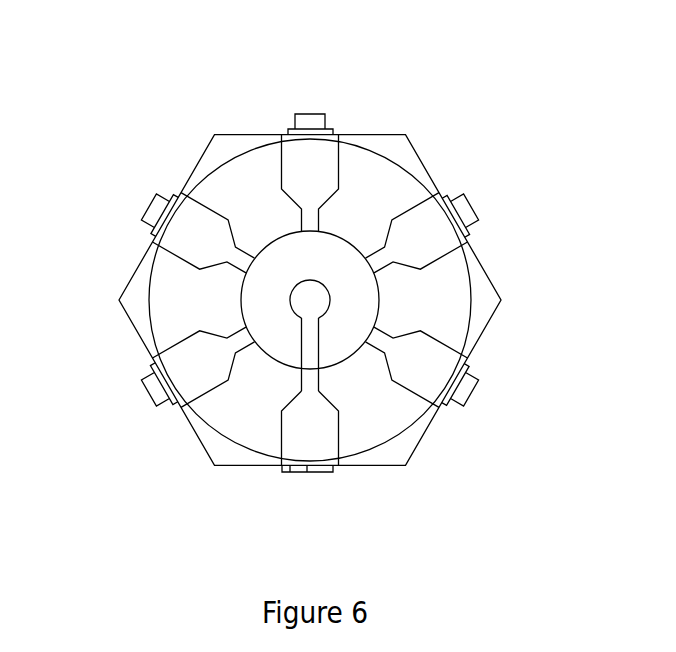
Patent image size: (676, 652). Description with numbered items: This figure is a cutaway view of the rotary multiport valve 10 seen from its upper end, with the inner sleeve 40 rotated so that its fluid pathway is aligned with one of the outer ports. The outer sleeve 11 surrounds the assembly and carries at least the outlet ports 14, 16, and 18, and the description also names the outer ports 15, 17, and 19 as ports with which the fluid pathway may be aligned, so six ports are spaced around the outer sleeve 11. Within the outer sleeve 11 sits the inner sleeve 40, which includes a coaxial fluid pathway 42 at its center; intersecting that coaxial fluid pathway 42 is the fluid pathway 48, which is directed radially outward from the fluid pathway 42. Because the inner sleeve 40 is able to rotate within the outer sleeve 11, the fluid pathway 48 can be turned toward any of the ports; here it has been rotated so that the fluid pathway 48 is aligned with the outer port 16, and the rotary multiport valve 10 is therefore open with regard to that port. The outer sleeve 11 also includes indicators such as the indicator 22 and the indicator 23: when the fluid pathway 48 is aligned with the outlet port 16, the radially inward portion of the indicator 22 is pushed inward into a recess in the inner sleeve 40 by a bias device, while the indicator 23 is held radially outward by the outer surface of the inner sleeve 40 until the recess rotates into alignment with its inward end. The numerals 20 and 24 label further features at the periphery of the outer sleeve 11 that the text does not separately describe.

The rotary multiport valve 10 is at (502, 98).
The outer sleeve 11 is at (240, 178).
The outlet port 14 is at (180, 390).
The outer port 15 is at (463, 240).
The outlet port 16 is at (332, 450).
The outer port 17 is at (287, 134).
The outlet port 18 is at (430, 390).
The outer port 19 is at (180, 197).
The tab 20 is at (152, 388).
The indicator 22 is at (308, 473).
The indicator 23 is at (312, 120).
The tab 24 is at (465, 385).
The inner sleeve 40 is at (335, 247).
The coaxial fluid pathway 42 is at (290, 297).
The fluid pathway 48 is at (310, 372).